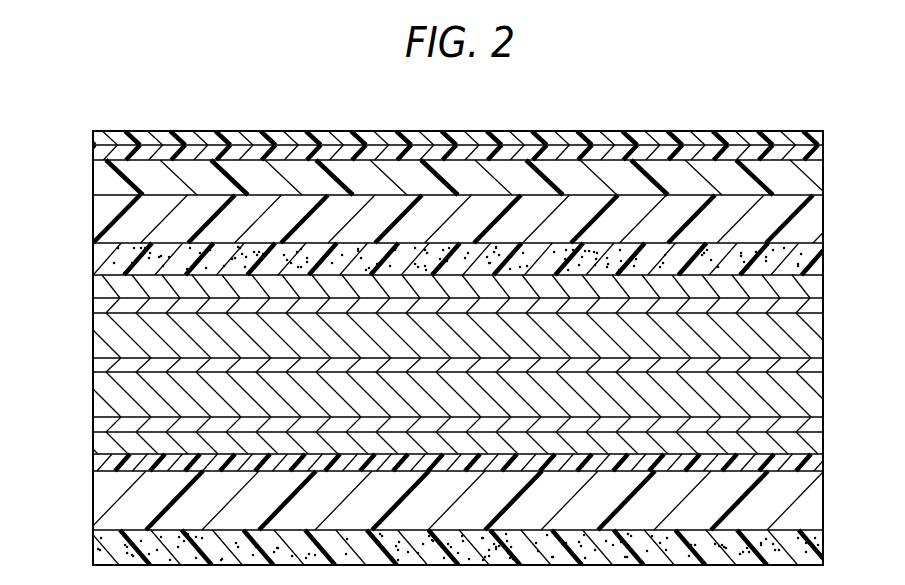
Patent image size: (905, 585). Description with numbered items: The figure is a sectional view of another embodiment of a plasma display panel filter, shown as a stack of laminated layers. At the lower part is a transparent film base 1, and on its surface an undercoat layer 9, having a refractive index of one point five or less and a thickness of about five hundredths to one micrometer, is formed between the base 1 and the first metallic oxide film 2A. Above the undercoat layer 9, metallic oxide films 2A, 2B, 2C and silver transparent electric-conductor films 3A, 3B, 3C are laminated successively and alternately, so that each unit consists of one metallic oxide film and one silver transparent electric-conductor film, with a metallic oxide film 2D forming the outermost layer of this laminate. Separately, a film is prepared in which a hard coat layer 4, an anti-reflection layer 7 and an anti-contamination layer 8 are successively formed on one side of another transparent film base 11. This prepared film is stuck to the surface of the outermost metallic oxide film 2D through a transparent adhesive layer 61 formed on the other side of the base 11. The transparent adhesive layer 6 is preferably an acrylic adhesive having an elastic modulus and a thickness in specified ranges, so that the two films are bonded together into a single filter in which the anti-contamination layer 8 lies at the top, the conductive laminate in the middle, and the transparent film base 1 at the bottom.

The transparent film base 1 is at (826, 505).
The metallic oxide film 2A is at (826, 448).
The metallic oxide film 2B is at (826, 397).
The metallic oxide film 2C is at (826, 337).
The metallic oxide film 2D is at (826, 288).
The silver transparent electric-conductor film 3A is at (95, 427).
The silver transparent electric-conductor film 3B is at (95, 367).
The silver transparent electric-conductor film 3C is at (95, 306).
The hard coat layer 4 is at (826, 184).
The transparent adhesive layer 6 is at (826, 550).
The transparent adhesive layer 61 is at (826, 258).
The anti-reflection layer 7 is at (95, 153).
The anti-contamination layer 8 is at (826, 141).
The undercoat layer 9 is at (95, 463).
The transparent film base 11 is at (826, 220).